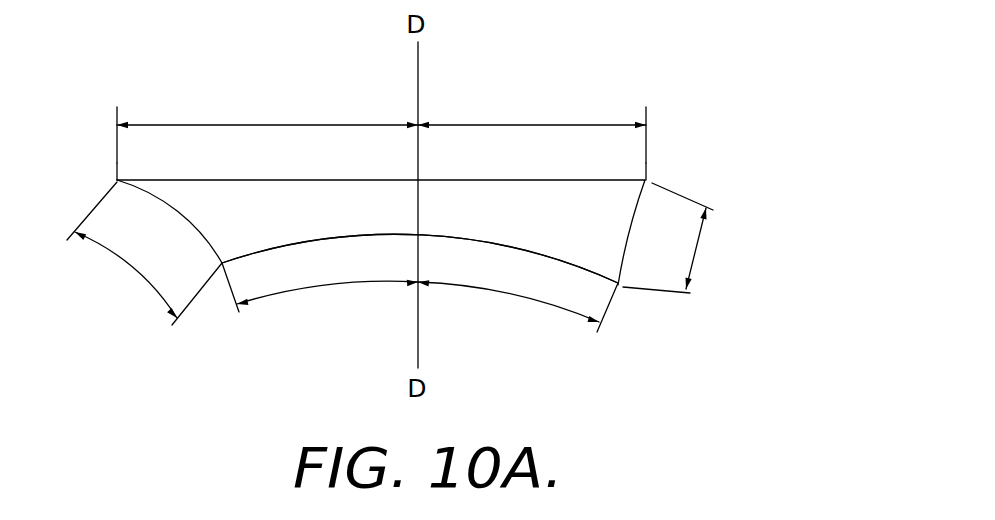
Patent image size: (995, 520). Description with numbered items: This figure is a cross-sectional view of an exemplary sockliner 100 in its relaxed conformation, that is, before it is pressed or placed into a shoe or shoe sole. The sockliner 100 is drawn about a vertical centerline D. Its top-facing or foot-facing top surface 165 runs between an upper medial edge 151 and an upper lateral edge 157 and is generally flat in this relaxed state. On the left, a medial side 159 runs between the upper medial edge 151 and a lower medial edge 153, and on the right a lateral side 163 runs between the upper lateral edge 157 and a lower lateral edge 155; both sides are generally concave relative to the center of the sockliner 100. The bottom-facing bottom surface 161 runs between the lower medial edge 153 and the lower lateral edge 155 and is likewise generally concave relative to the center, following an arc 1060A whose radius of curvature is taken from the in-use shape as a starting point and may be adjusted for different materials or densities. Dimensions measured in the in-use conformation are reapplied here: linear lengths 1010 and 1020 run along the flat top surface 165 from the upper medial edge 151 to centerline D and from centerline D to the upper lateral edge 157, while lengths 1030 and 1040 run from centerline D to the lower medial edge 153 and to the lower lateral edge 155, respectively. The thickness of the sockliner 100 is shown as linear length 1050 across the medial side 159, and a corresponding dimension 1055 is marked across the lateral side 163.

The sockliner 100 is at (601, 50).
The upper medial edge 151 is at (117, 180).
The lower medial edge 153 is at (222, 265).
The lower lateral edge 155 is at (618, 285).
The upper lateral edge 157 is at (647, 180).
The medial side 159 is at (183, 217).
The bottom surface 161 is at (520, 252).
The lateral side 163 is at (660, 243).
The top surface 165 is at (265, 180).
The linear length 1010 is at (267, 126).
The linear length 1020 is at (532, 126).
The length 1030 is at (320, 287).
The length 1040 is at (512, 298).
The linear length 1050 is at (132, 263).
The second side dimension 1055 is at (695, 252).
The arc 1060A is at (405, 240).